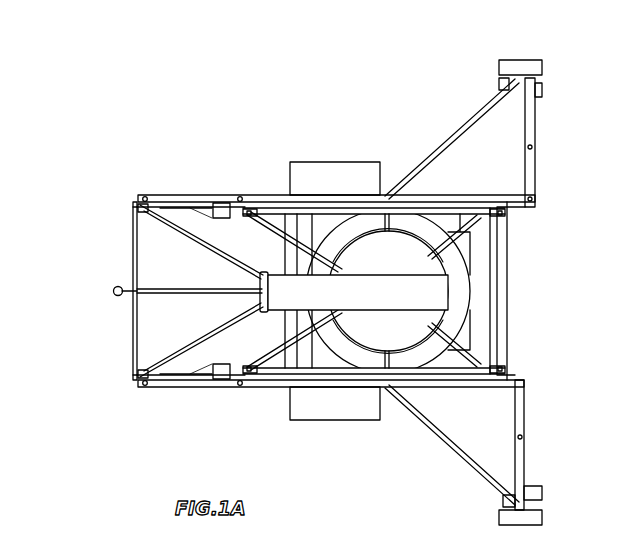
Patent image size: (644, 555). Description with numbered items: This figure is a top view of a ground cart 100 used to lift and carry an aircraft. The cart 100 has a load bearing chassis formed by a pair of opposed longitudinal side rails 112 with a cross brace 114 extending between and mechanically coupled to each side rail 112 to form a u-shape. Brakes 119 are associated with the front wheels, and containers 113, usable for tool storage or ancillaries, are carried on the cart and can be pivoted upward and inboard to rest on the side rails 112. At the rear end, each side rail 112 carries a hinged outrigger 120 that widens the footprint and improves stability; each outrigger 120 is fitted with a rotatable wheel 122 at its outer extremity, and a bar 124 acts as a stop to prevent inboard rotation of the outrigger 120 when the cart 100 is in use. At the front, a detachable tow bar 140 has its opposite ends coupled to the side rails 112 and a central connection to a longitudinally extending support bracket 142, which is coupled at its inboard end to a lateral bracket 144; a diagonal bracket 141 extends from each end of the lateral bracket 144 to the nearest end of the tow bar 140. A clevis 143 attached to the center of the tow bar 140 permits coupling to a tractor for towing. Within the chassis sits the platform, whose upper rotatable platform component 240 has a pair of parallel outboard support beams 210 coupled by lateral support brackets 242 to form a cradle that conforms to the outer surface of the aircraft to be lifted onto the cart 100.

The cart 100 is at (95, 126).
The side rail 112 is at (190, 195).
The container 113 is at (318, 166).
The cross brace 114 is at (492, 320).
The brake 119 is at (222, 203).
The outrigger 120 is at (538, 137).
The wheel 122 is at (545, 97).
The bar 124 is at (448, 136).
The tow bar 140 is at (132, 225).
The diagonal bracket 141 is at (203, 238).
The longitudinally extending support bracket 142 is at (206, 289).
The clevis 143 is at (113, 292).
The lateral bracket 144 is at (260, 300).
The outboard support beam 210 is at (337, 216).
The upper rotatable platform component 240 is at (470, 268).
The lateral support bracket 242 is at (430, 242).